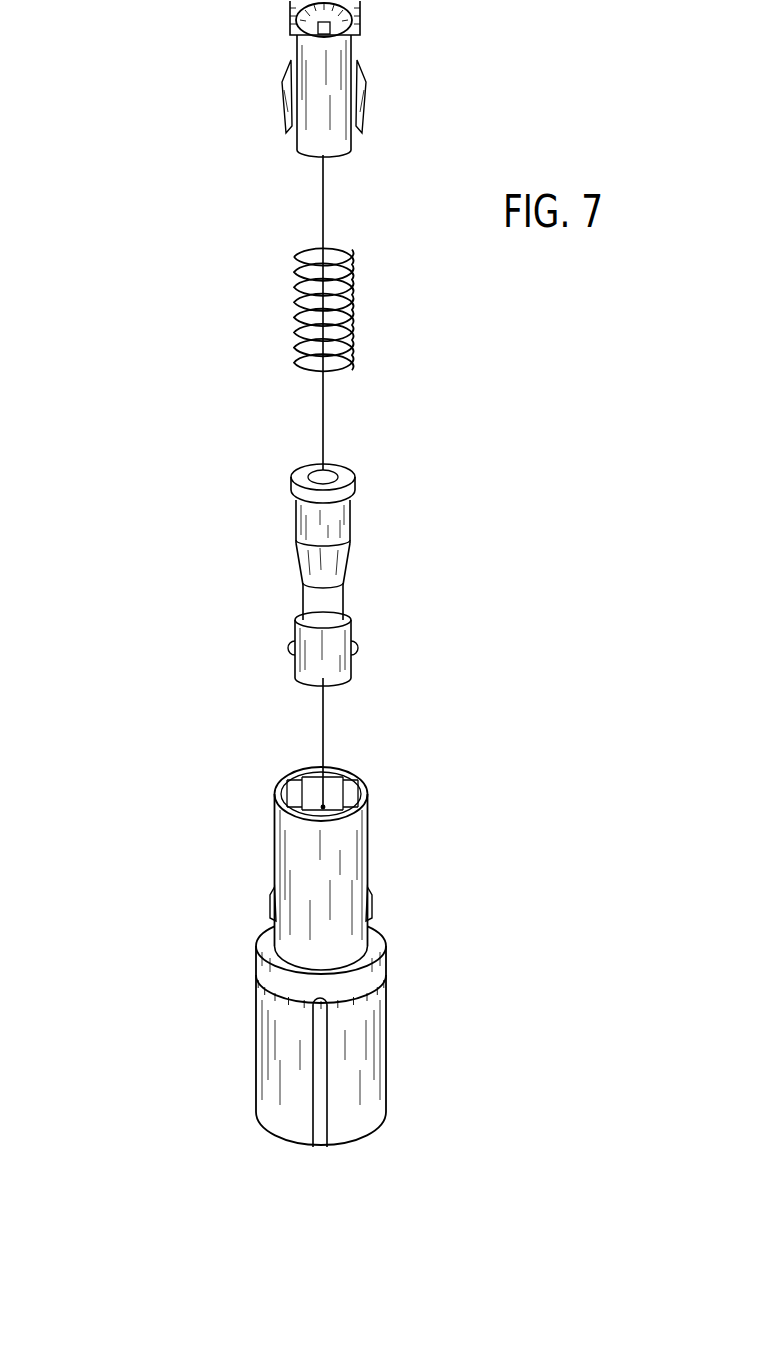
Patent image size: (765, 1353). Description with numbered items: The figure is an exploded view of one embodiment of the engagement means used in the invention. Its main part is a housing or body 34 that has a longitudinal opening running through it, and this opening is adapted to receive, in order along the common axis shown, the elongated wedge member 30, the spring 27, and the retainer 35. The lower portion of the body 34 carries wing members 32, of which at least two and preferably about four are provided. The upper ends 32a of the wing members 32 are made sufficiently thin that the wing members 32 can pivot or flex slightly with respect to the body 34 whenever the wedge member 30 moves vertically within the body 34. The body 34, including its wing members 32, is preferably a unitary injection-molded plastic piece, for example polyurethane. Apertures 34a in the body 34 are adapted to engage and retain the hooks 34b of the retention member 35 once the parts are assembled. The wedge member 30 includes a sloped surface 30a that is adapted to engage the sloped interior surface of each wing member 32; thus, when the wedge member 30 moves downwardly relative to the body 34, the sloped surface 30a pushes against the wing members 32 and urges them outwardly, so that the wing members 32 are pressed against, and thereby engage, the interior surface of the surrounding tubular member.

The spring 27 is at (353, 310).
The elongated wedge member 30 is at (379, 575).
The sloped surface 30a is at (350, 563).
The wing members 32 is at (309, 1061).
The upper ends of the wing members 32a is at (293, 1000).
The body 34 is at (390, 957).
The apertures 34a is at (275, 903).
The hooks 34b is at (283, 88).
The retainer 35 is at (290, 142).